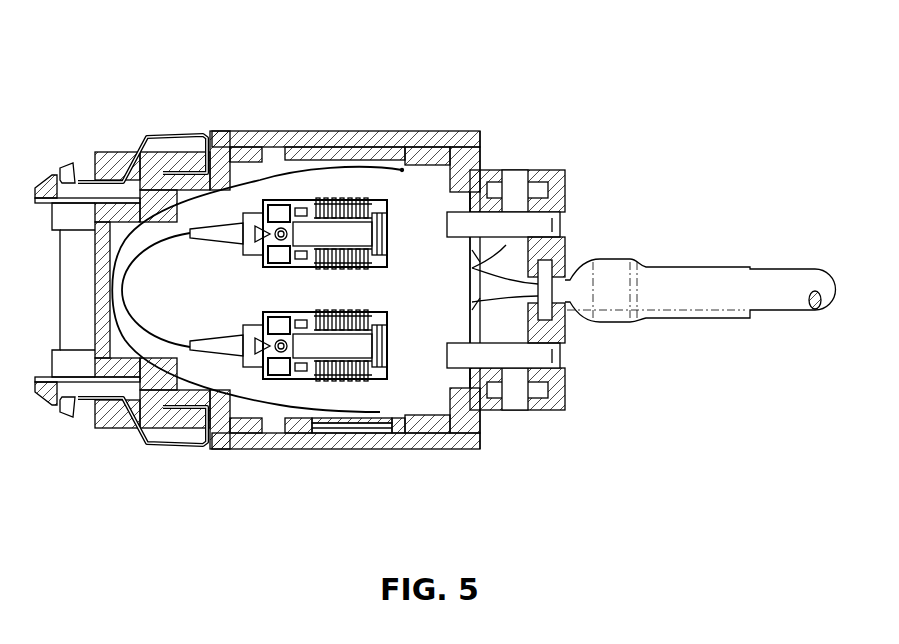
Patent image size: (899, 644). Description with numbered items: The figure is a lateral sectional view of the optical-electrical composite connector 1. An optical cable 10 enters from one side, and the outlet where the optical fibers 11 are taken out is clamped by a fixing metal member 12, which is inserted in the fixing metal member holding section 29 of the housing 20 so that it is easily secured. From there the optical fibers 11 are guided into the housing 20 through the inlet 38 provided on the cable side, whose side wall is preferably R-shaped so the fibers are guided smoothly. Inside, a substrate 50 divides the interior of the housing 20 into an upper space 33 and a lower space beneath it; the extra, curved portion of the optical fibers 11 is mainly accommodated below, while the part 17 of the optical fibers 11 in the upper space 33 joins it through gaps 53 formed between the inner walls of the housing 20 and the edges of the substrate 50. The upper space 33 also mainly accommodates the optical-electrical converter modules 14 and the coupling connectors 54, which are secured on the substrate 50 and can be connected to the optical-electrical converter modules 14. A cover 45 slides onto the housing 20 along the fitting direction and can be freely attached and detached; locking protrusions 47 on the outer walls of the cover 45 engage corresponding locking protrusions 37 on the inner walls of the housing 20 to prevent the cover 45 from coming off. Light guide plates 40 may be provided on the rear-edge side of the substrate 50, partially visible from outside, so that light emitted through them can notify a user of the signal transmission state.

The optical-electrical composite connector 1 is at (296, 120).
The optical cable 10 is at (785, 284).
The optical fibers 11 is at (247, 185).
The fixing metal member 12 is at (550, 300).
The optical-electrical converter module 14 is at (333, 232).
The part of the optical fibers 17 is at (185, 290).
The housing 20 is at (352, 451).
The fixing metal member holding section 29 is at (540, 273).
The upper space 33 is at (433, 192).
The locking protrusion 37 is at (263, 433).
The inlet 38 is at (506, 248).
The light guide plate 40 is at (545, 224).
The cover 45 is at (117, 147).
The locking protrusion 47 is at (316, 433).
The substrate 50 is at (400, 148).
The gap 53 is at (370, 150).
The coupling connector 54 is at (345, 386).